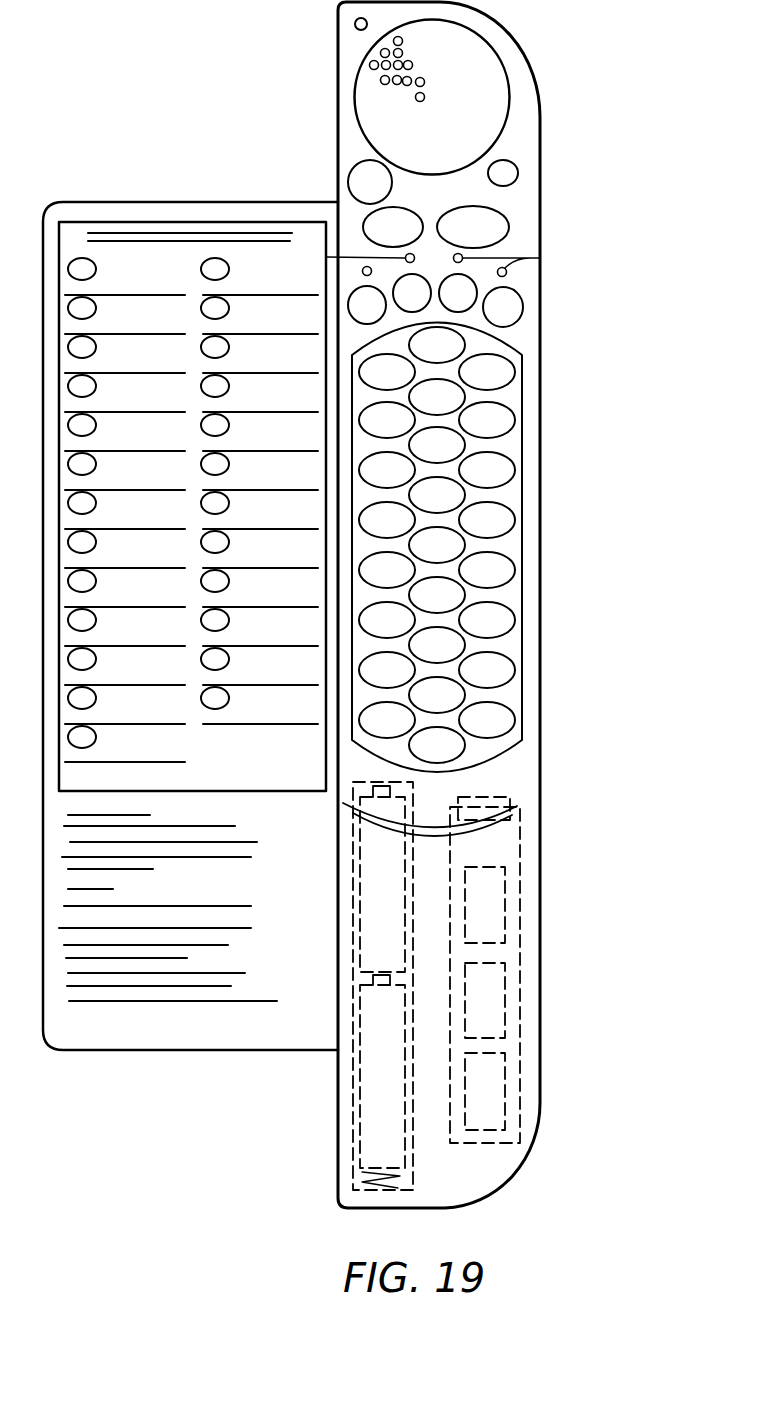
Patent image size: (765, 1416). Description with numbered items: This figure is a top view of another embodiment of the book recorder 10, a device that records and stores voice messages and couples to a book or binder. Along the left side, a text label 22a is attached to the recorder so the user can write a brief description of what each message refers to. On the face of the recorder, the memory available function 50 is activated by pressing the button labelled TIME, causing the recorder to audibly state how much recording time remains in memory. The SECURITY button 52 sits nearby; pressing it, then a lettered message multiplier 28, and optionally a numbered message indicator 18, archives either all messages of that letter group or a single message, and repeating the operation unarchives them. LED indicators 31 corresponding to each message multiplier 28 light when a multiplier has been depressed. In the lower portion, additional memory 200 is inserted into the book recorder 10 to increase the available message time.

The book recorder 10 is at (563, 315).
The text label 22a is at (112, 258).
The memory available function 50 is at (350, 173).
The SECURITY button 52 is at (412, 207).
The LED indicators 31 is at (362, 268).
The message multiplier 28 is at (500, 312).
The message indicator 18 is at (497, 457).
The additional memory 200 is at (497, 913).